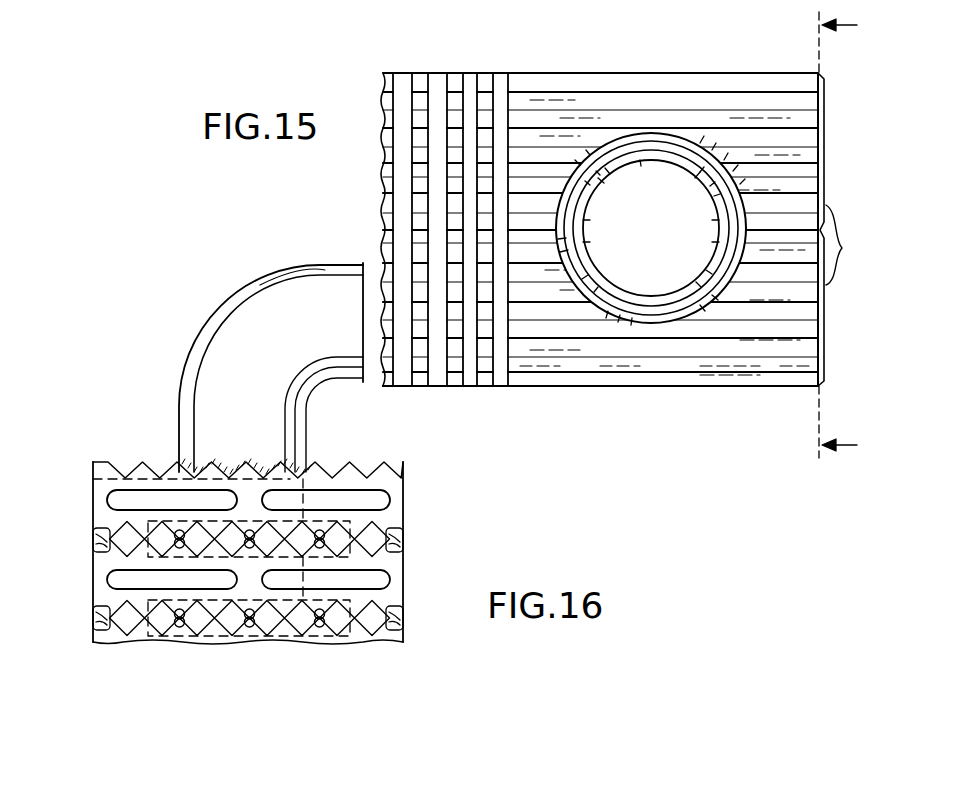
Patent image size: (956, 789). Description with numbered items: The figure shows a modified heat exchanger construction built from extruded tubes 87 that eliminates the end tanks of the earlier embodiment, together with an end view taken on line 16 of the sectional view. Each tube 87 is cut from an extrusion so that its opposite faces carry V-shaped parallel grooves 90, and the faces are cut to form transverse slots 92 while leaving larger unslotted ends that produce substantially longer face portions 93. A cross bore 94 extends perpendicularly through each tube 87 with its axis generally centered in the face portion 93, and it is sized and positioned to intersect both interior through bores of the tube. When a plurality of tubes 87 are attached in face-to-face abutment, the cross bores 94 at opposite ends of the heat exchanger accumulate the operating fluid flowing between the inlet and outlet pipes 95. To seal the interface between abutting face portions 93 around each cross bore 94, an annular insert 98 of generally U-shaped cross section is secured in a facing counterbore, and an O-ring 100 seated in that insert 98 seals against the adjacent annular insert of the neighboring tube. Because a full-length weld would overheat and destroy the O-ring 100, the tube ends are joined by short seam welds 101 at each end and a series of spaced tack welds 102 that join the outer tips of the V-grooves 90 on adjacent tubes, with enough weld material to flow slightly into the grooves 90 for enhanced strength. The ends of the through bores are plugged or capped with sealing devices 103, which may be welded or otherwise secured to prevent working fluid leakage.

In FIG. 15, the extruded tube 87 is at (625, 119).
In FIG. 15, the V-shaped parallel grooves 90 is at (550, 137).
In FIG. 16, the V-shaped parallel grooves 90 is at (127, 613).
In FIG. 15, the transverse slots 92 is at (430, 96).
In FIG. 15, the face portion 93 is at (575, 346).
In FIG. 15, the cross bore 94 is at (616, 278).
In FIG. 15, the inlet and outlet pipes 95 is at (220, 355).
In FIG. 15, the annular insert 98 is at (668, 134).
In FIG. 15, the O-ring 100 is at (648, 150).
In FIG. 16, the short seam welds 101 is at (97, 538).
In FIG. 16, the tack welds 102 is at (246, 532).
In FIG. 15, the sealing devices 103 is at (854, 245).
In FIG. 15, the section line 16— 16 is at (822, 235).